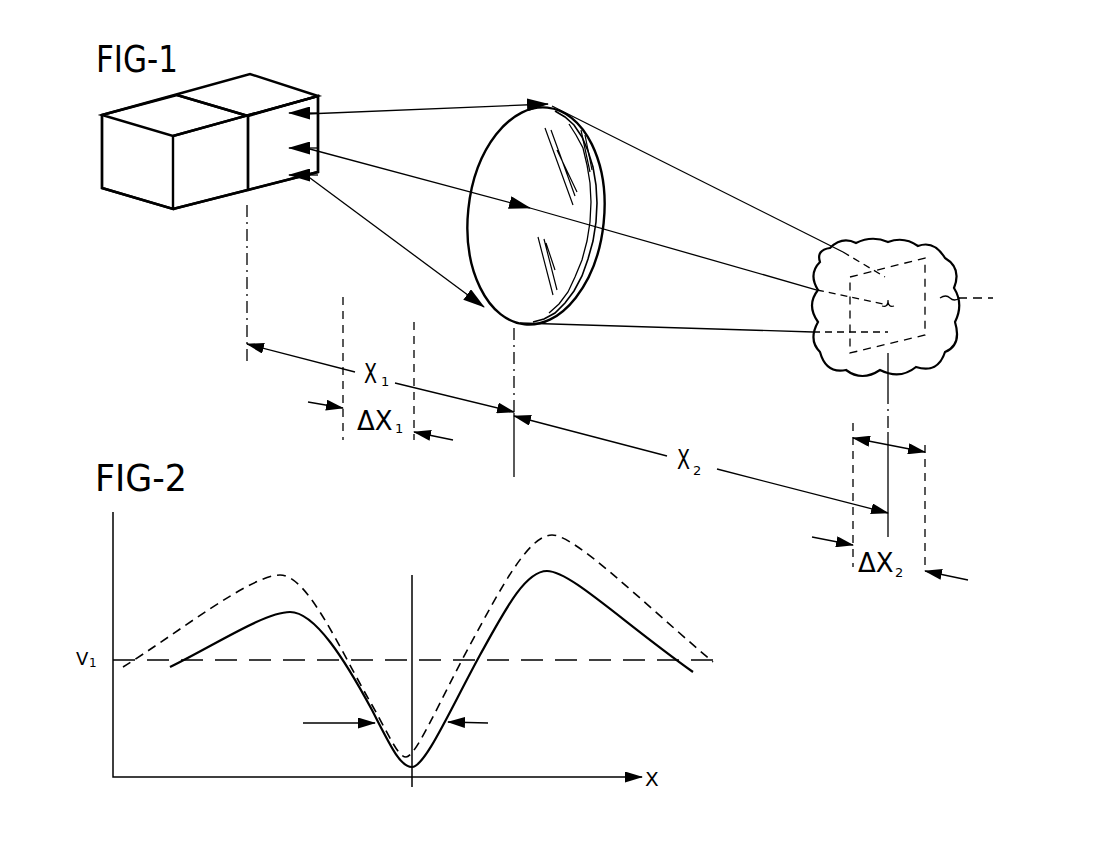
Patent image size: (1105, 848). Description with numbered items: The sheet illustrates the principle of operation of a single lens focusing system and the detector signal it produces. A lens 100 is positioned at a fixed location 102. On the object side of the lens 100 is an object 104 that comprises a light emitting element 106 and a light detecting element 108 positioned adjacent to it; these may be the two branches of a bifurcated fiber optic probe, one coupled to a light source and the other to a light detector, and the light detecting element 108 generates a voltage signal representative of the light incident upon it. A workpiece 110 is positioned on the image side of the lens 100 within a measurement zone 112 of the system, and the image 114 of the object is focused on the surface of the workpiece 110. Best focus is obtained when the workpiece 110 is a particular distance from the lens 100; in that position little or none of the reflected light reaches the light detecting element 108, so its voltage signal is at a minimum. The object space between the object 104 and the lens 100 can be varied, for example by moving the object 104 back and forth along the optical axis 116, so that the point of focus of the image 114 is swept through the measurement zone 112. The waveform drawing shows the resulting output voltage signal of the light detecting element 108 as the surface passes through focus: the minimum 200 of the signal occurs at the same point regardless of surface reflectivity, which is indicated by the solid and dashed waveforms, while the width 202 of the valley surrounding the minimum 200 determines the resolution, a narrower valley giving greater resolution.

In FIG. 1, the lens 100 is at (560, 113).
In FIG. 1, the fixed location 102 is at (514, 364).
In FIG. 1, the object 104 is at (278, 196).
In FIG. 1, the light emitting element 106 is at (318, 99).
In FIG. 1, the light detecting element 108 is at (212, 194).
In FIG. 1, the workpiece 110 is at (938, 253).
In FIG. 1, the measurement zone 112 is at (916, 434).
In FIG. 1, the image 114 is at (990, 299).
In FIG. 1, the optical axis 116 is at (702, 254).
In FIG. 2, the minimum of the signal 200 is at (412, 598).
In FIG. 2, the width of the valley 202 is at (488, 723).